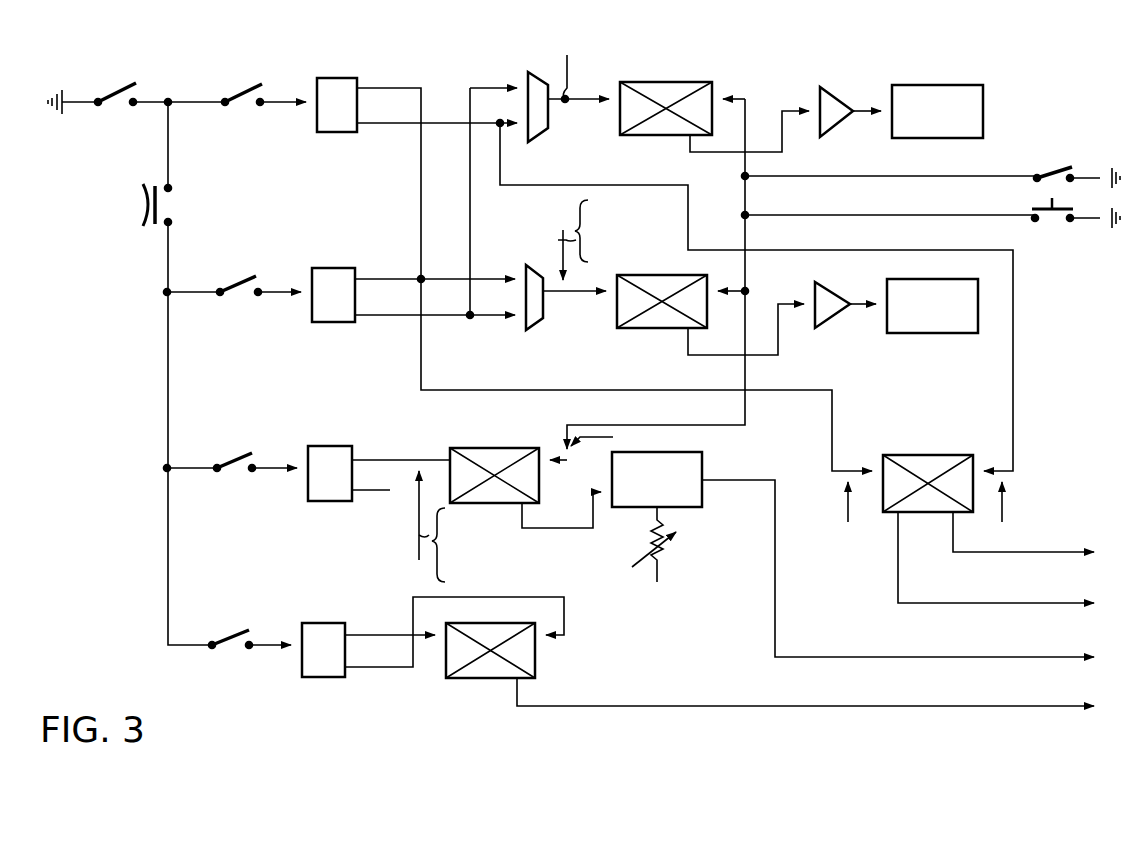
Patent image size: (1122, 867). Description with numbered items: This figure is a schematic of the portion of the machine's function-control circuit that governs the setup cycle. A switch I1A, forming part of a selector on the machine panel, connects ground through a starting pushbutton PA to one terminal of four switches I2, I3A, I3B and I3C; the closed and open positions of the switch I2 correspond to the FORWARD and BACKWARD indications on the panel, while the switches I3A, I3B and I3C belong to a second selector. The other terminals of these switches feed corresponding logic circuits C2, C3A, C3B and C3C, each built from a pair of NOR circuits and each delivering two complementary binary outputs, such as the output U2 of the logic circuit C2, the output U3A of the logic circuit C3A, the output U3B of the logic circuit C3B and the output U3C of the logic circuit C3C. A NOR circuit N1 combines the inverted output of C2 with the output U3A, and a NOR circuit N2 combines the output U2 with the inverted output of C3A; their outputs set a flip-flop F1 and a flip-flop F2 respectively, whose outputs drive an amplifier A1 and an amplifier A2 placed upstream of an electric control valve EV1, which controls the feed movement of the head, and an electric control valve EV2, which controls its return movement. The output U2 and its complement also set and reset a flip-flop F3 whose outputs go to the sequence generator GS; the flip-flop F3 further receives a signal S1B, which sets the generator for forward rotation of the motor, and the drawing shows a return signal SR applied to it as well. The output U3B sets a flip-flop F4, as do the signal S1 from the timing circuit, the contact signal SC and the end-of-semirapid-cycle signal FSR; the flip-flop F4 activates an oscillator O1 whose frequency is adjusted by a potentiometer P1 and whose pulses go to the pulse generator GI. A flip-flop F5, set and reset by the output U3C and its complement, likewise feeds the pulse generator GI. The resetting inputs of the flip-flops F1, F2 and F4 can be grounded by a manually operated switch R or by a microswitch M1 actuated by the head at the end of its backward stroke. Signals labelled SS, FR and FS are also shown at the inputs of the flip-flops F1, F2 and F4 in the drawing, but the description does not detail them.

The switch I1A is at (114, 81).
The switch I2 is at (241, 96).
The starting pushbutton PA is at (138, 202).
The logic circuit C2 is at (340, 134).
The output of logic circuit C2 U2 is at (378, 99).
The NOR logic circuit N1 is at (534, 143).
The signal SS is at (577, 79).
The flip-flop F1 is at (658, 81).
The amplifier A1 is at (839, 92).
The electric control valve EV1 is at (983, 102).
The switch R is at (1060, 152).
The microswitch M1 is at (1050, 222).
The switch I3A is at (230, 282).
The logic circuit C3A is at (338, 324).
The output of logic circuit C3A U3A is at (375, 290).
The NOR logic circuit N2 is at (531, 331).
The signals SR SS FR is at (585, 236).
The flip-flop F2 is at (653, 276).
The amplifier A2 is at (835, 287).
The electric control valve EV2 is at (996, 284).
The switch I3B is at (228, 459).
The logic circuit C3B is at (330, 503).
The output of logic circuit C3B U3B is at (373, 466).
The signal S1 is at (440, 526).
The contact signal SC is at (451, 544).
The signal of end of semirapid cycle FSR is at (455, 570).
The flip-flop F4 is at (502, 448).
The signal FS is at (598, 437).
The oscillator O1 is at (690, 450).
The potentiometer P1 is at (672, 552).
The flip-flop F3 is at (922, 454).
The signal S1B is at (848, 500).
The return signal SR is at (1002, 492).
The sequence generator GS is at (1065, 567).
The pulse generator GI is at (1063, 671).
The switch I3C is at (225, 634).
The logic circuit C3C is at (326, 679).
The output of logic circuit C3C U3C is at (367, 642).
The flip-flop F5 is at (528, 668).